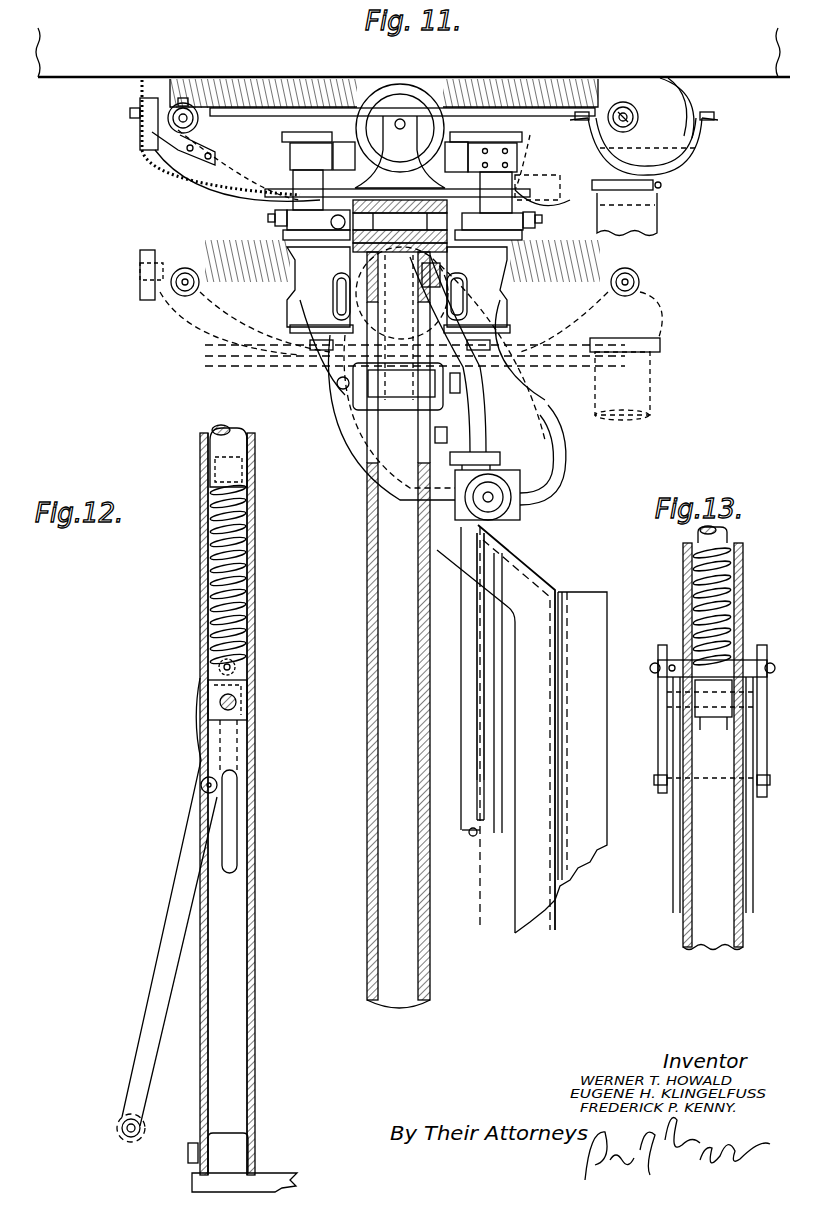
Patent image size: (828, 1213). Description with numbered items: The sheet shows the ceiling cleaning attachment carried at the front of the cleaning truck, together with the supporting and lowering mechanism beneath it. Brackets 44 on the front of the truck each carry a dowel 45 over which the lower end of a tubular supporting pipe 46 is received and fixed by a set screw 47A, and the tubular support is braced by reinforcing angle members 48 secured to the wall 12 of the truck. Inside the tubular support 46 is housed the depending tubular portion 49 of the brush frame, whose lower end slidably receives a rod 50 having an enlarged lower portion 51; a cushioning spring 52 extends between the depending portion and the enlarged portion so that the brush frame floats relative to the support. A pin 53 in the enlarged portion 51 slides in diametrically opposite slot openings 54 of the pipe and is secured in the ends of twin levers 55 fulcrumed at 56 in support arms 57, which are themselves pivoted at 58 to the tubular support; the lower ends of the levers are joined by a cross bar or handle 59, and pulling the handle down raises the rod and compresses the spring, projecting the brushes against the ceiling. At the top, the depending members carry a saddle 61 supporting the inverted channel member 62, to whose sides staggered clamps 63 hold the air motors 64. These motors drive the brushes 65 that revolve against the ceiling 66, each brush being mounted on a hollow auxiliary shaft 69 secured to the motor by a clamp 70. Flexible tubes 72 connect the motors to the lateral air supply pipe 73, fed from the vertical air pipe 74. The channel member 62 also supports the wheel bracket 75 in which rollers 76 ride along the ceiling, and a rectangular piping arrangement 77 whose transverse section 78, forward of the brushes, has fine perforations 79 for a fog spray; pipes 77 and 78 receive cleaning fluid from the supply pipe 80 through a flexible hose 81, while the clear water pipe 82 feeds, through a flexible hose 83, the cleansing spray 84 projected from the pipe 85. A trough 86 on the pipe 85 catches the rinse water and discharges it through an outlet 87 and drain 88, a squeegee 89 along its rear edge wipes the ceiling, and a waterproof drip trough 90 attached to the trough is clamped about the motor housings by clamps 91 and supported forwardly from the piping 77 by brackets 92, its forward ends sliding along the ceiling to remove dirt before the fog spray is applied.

In FIG. 11, the wall 12 is at (588, 592).
In FIG. 12, the brackets 44 is at (270, 1180).
In FIG. 12, the dowel 45 is at (233, 1152).
In FIG. 11, the tubular supporting pipe 46 is at (368, 655).
In FIG. 12, the tubular supporting pipe 46 is at (258, 950).
In FIG. 13, the tubular supporting pipe 46 is at (743, 560).
In FIG. 12, the set screw 47A is at (192, 1152).
In FIG. 11, the reinforcing angle members 48 is at (520, 575).
In FIG. 11, the depending tubular portions 49 is at (372, 538).
In FIG. 12, the depending tubular portions 49 is at (217, 443).
In FIG. 13, the depending tubular portions 49 is at (712, 534).
In FIG. 12, the rods 50 is at (252, 578).
In FIG. 12, the enlarged lower portion 51 is at (240, 724).
In FIG. 13, the enlarged lower portion 51 is at (710, 717).
In FIG. 12, the cushioning spring 52 is at (215, 608).
In FIG. 13, the cushioning spring 52 is at (712, 606).
In FIG. 12, the pin 53 is at (248, 700).
In FIG. 13, the pin 53 is at (733, 695).
In FIG. 12, the slot openings 54 is at (230, 845).
In FIG. 13, the slot openings 54 is at (692, 827).
In FIG. 12, the twin levers 55 is at (168, 948).
In FIG. 13, the twin levers 55 is at (683, 877).
In FIG. 12, the fulcrum 56 is at (203, 786).
In FIG. 13, the fulcrum 56 is at (667, 790).
In FIG. 13, the support arms 57 is at (658, 715).
In FIG. 12, the pivot 58 is at (222, 667).
In FIG. 13, the pivot 58 is at (673, 660).
In FIG. 12, the cross bar or handle 59 is at (118, 1130).
In FIG. 11, the saddle 61 is at (330, 283).
In FIG. 11, the inverted channel member 62 is at (396, 200).
In FIG. 11, the clamps 63 is at (300, 218).
In FIG. 11, the air motors 64 is at (312, 315).
In FIG. 11, the brushes 65 is at (240, 82).
In FIG. 11, the ceiling 66 is at (318, 132).
In FIG. 11, the hollow auxiliary shaft 69 is at (348, 142).
In FIG. 11, the clamp 70 is at (300, 158).
In FIG. 11, the flexible tubes 72 is at (345, 395).
In FIG. 11, the air supply pipe 73 is at (495, 485).
In FIG. 11, the vertical air pipe 74 is at (490, 740).
In FIG. 11, the wheel bracket 75 is at (458, 132).
In FIG. 11, the wheels or rollers 76 is at (405, 100).
In FIG. 11, the rectangular piping arrangement 77 is at (235, 190).
In FIG. 11, the transverse pipe section 78 is at (145, 148).
In FIG. 11, the fine perforations 79 is at (185, 100).
In FIG. 11, the cleaning fluid supply pipe 80 is at (470, 830).
In FIG. 11, the flexible hose 81 is at (470, 412).
In FIG. 11, the clear water pipe 82 is at (490, 822).
In FIG. 11, the flexible hose 83 is at (450, 362).
In FIG. 11, the cleansing spray 84 is at (628, 100).
In FIG. 11, the pipe 85 is at (640, 125).
In FIG. 11, the trough 86 is at (672, 150).
In FIG. 11, the outlet 87 is at (660, 203).
In FIG. 11, the drain 88 is at (660, 225).
In FIG. 11, the squeegee 89 is at (690, 100).
In FIG. 11, the drip trough 90 is at (510, 158).
In FIG. 11, the clamps 91 is at (540, 195).
In FIG. 11, the brackets 92 is at (170, 168).